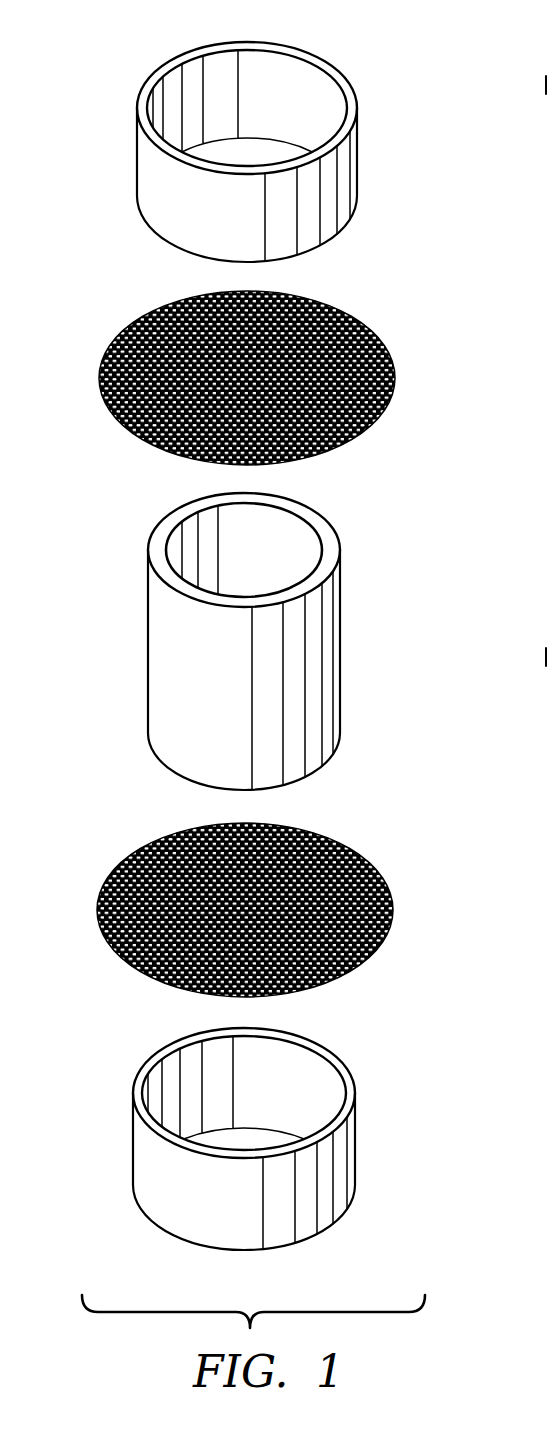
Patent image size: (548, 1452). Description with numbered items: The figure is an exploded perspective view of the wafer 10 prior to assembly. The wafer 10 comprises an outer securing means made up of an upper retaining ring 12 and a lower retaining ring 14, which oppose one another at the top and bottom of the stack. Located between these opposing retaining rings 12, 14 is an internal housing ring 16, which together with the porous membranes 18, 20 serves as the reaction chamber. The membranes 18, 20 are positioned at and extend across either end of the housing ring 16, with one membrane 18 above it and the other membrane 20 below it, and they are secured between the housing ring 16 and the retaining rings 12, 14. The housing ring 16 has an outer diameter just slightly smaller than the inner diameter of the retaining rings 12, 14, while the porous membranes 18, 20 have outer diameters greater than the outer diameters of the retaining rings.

The wafer 10 is at (85, 603).
The upper retaining ring 12 is at (356, 165).
The lower retaining ring 14 is at (356, 1152).
The internal housing ring 16 is at (338, 640).
The porous membrane 18 is at (382, 347).
The porous membrane 20 is at (378, 873).